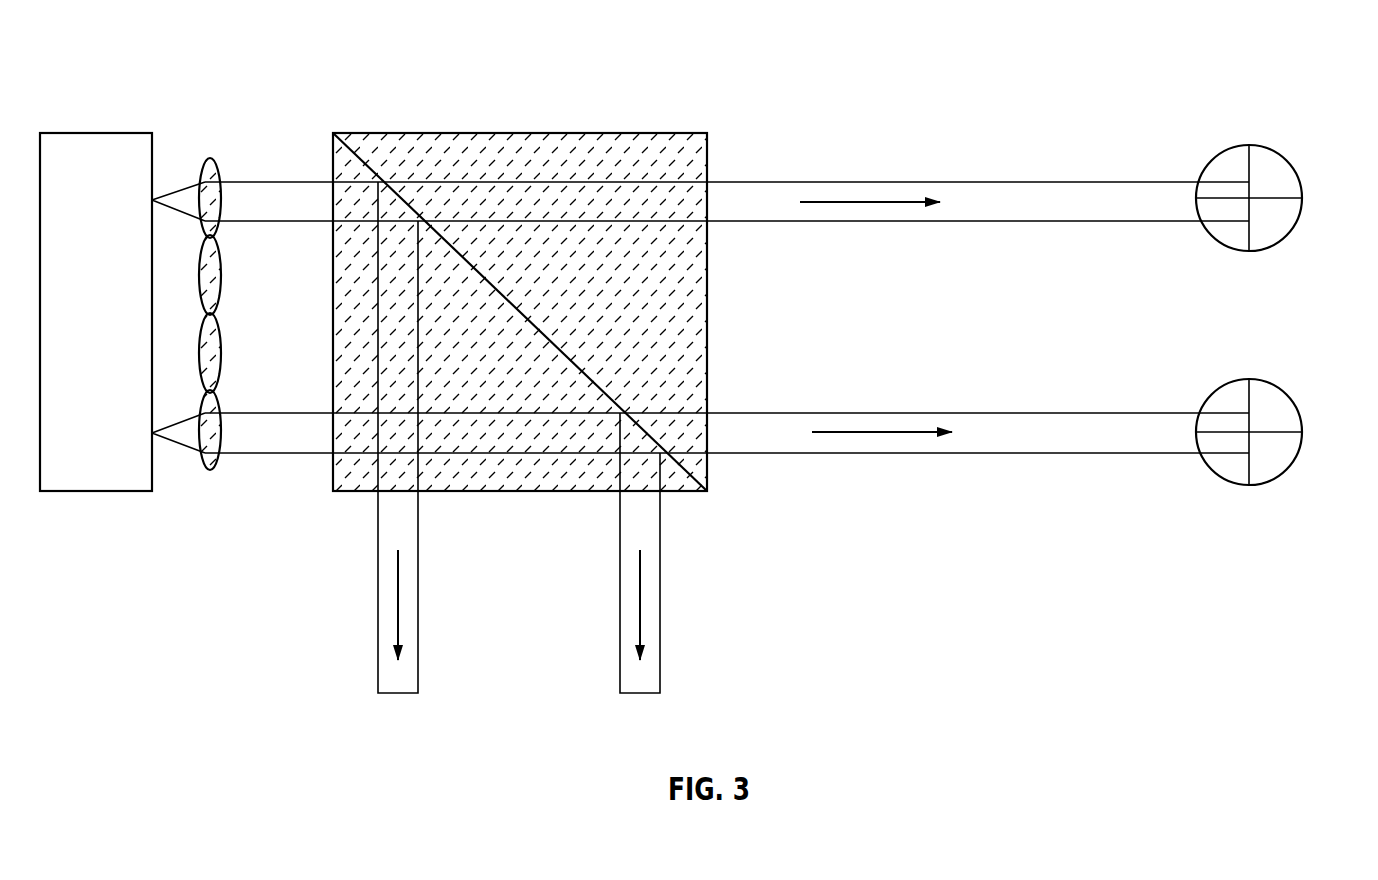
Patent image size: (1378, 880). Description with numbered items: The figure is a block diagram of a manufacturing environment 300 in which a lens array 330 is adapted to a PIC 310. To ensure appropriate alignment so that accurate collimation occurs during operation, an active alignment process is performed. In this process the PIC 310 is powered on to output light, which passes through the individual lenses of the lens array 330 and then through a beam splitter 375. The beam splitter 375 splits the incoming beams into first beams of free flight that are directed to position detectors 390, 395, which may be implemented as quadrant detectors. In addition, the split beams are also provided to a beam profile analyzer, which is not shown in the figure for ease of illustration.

The manufacturing environment 300 is at (154, 50).
The PIC 310 is at (97, 492).
The lens array 330 is at (214, 466).
The beam splitter 375 is at (518, 133).
The position detector 390 is at (1278, 158).
The position detector 395 is at (1283, 397).